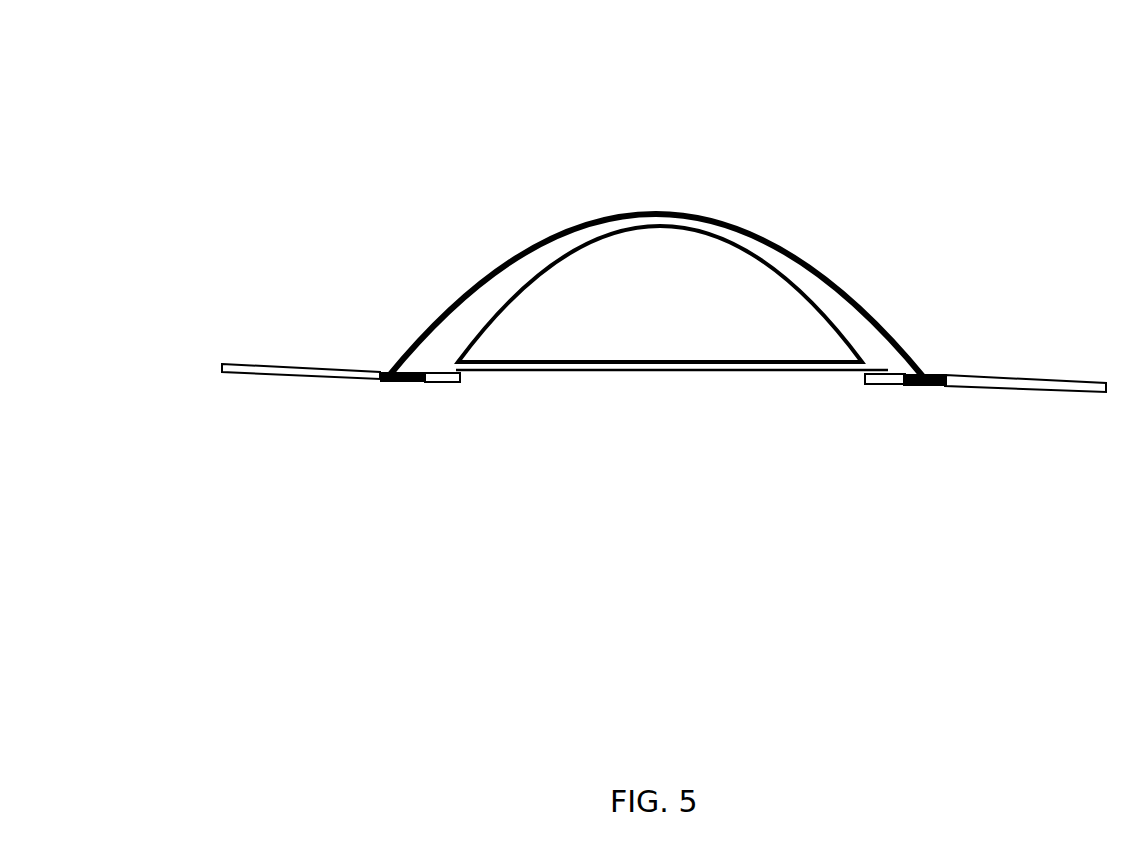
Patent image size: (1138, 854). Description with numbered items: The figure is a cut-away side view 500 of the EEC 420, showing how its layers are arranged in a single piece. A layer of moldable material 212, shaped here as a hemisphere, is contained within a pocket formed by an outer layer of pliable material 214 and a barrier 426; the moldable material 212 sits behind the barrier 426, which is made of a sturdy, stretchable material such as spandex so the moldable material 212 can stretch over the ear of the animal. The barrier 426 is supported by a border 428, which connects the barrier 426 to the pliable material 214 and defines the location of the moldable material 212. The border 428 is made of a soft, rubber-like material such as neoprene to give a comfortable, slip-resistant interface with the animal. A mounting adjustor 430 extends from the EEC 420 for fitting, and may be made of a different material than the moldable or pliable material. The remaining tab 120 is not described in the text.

The side view 500 is at (140, 103).
The EEC 420 is at (636, 160).
The pliable material 214 is at (751, 231).
The mounting adjustor 430 is at (289, 348).
The right substrate / base 120 is at (1003, 352).
The moldable material 212 is at (650, 305).
The barrier 426 is at (668, 371).
The border 428 is at (445, 383).